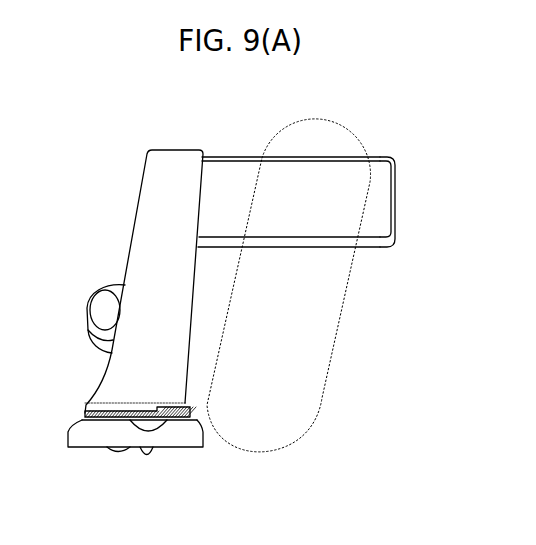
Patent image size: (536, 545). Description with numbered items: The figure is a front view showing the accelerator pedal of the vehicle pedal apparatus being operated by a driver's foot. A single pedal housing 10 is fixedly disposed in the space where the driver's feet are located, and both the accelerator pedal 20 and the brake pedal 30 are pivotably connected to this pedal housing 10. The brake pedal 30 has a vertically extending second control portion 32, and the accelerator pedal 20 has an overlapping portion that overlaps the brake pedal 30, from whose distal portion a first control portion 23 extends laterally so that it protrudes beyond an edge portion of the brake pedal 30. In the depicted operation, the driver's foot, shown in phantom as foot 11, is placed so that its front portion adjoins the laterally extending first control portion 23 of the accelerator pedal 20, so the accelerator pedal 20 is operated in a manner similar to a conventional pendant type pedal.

The pedal housing 10 is at (92, 442).
The portable electronic device 11 is at (322, 340).
The accelerator pedal 20 is at (322, 173).
The first control portion 23 is at (385, 201).
The brake pedal 30 is at (143, 166).
The second control portion 32 is at (143, 231).